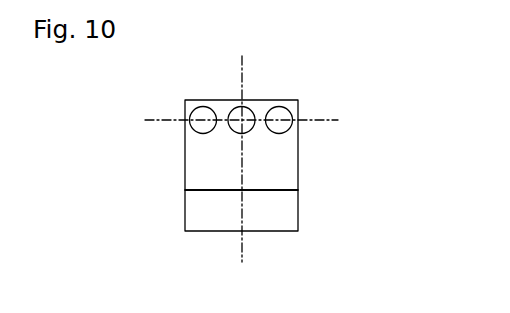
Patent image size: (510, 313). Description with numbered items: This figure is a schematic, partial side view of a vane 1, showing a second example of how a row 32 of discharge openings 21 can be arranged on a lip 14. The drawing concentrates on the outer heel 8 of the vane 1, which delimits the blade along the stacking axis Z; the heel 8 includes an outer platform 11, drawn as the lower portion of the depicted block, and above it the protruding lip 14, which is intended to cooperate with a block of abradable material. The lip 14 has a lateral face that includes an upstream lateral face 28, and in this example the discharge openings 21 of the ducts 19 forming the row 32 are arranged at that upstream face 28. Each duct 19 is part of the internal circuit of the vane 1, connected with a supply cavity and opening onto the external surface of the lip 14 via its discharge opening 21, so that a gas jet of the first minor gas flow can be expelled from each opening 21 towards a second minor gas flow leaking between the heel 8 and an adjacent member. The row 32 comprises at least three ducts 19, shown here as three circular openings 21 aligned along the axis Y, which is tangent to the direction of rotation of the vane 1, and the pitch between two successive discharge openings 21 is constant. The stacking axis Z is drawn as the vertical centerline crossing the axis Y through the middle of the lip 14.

The vane 1 is at (328, 191).
The outer heel 8 is at (299, 78).
The first row 32 is at (320, 100).
The upstream lateral face 28 is at (283, 162).
The duct 19 is at (275, 130).
The discharge opening 21 is at (241, 120).
The lip 14 is at (172, 184).
The outer platform 11 is at (200, 218).
The axis Y is at (162, 120).
The stacking axis Z is at (242, 82).